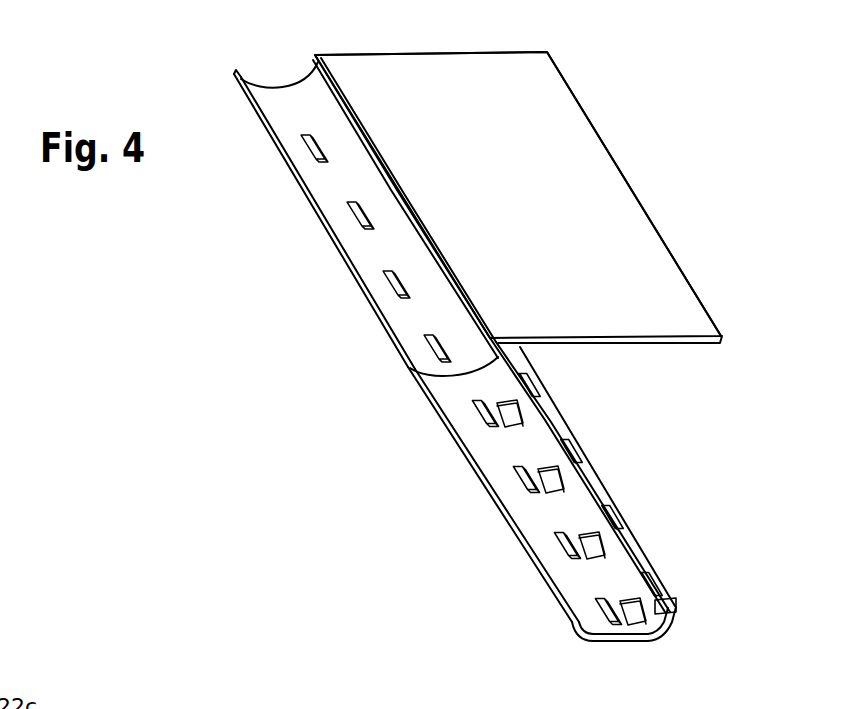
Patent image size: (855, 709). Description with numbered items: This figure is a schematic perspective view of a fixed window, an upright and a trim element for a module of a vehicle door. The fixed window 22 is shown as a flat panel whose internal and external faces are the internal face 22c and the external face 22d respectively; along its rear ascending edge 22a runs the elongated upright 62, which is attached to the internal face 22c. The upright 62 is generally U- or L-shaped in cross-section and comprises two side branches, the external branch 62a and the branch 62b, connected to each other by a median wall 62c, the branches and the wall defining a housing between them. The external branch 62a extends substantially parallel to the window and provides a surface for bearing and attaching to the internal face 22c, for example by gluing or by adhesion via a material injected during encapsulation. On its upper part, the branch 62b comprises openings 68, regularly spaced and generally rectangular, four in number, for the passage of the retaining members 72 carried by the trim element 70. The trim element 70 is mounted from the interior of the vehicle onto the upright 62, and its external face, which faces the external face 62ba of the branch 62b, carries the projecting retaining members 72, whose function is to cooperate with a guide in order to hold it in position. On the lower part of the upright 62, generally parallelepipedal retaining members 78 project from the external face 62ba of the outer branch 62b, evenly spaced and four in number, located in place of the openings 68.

The fixed window 22 is at (479, 223).
The rear ascending edge 22a is at (314, 62).
The internal face 22c is at (671, 345).
The external face 22d is at (642, 275).
The elongated upright 62 is at (574, 505).
The external branch 62a is at (592, 487).
The branch 62b is at (530, 513).
The median wall 62c is at (673, 630).
The external face of the outer branch 62ba is at (620, 628).
The openings 68 is at (353, 248).
The trim element 70 is at (366, 218).
The retaining members 72 is at (352, 212).
The retaining members 78 is at (520, 477).